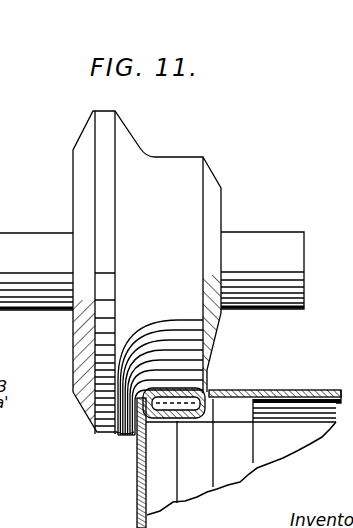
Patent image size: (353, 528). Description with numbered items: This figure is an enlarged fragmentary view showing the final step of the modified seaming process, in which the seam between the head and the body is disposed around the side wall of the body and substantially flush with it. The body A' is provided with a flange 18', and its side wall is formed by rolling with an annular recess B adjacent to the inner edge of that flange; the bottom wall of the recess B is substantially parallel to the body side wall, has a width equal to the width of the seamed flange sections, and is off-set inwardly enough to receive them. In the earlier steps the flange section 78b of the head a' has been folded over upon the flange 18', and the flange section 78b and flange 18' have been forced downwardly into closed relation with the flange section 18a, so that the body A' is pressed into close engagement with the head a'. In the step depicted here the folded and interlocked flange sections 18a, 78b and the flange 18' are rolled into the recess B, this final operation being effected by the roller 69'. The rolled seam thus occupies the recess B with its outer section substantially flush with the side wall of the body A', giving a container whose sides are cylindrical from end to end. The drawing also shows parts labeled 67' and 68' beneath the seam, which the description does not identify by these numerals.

The roller 69' is at (147, 272).
The hub bottom portion 78b is at (140, 428).
The flange section 18a is at (223, 350).
The flange 18' is at (204, 387).
The body A' is at (243, 391).
The head a' is at (123, 463).
The member 68' is at (203, 459).
The bolt 67' is at (253, 446).
The annular recess B is at (241, 474).